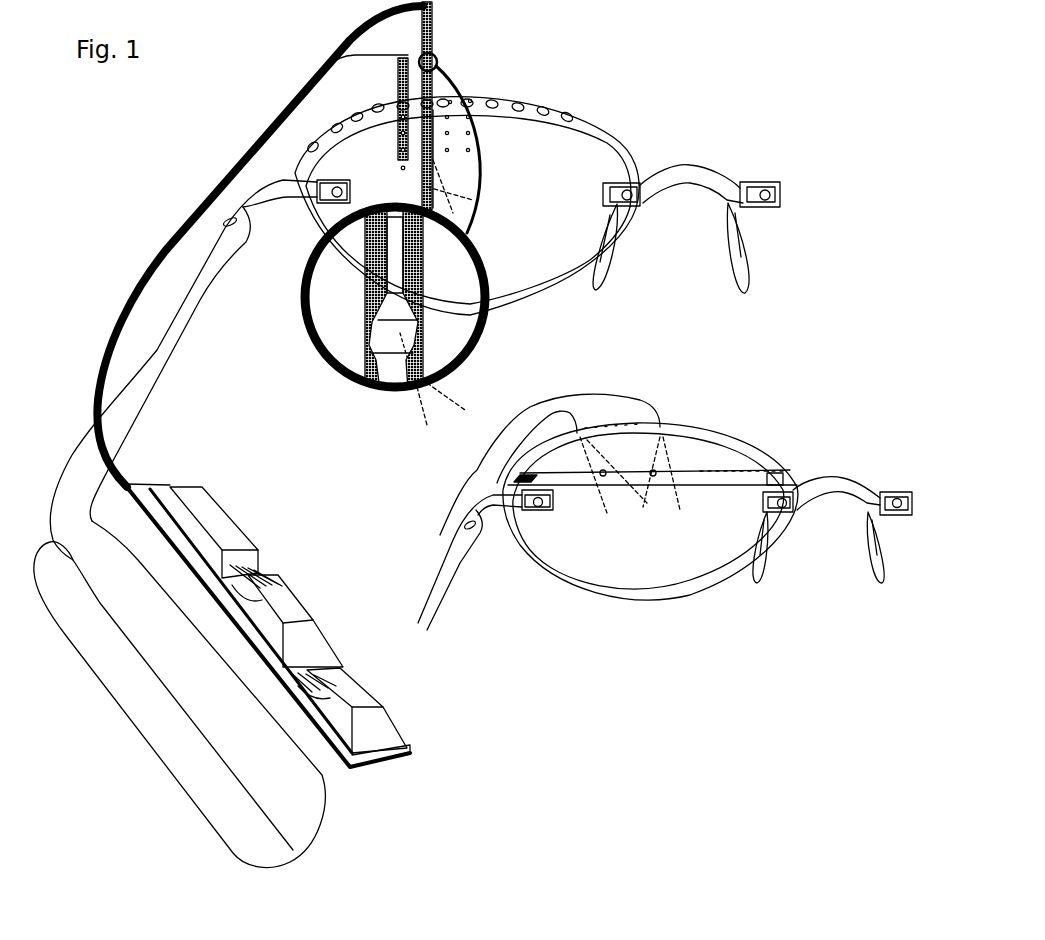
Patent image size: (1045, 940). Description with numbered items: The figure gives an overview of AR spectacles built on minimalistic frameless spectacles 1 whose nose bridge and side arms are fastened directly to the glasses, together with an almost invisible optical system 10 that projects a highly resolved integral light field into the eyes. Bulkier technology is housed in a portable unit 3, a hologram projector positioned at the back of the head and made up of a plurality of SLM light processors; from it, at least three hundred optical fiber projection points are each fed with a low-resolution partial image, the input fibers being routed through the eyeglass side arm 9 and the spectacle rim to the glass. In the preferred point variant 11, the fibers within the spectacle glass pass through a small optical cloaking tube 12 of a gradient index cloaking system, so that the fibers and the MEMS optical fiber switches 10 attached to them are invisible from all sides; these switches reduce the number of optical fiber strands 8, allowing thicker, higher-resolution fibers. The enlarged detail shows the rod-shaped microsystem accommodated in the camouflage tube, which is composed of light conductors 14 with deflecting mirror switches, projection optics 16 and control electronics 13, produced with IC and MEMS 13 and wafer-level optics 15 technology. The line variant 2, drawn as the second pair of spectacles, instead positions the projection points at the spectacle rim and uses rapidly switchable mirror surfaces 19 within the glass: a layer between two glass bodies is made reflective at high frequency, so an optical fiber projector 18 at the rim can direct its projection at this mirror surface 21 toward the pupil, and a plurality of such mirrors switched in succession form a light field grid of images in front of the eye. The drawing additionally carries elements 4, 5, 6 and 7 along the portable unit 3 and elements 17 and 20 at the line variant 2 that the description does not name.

The frameless spectacles 1 is at (597, 143).
The line variant 2 is at (610, 550).
The portable unit 3 is at (323, 827).
The mounting strip 4 is at (413, 755).
The battery module 5 is at (375, 717).
The connecting wires 6 is at (250, 568).
The control module 7 is at (220, 522).
The optical fiber strands 8 is at (105, 440).
The eyeglass side arm 9 is at (157, 352).
The optical system 10 is at (432, 33).
The point variant 11 is at (453, 137).
The optical cloaking tube 12 is at (423, 192).
The control electronics 13 is at (423, 247).
The light conductors 14 is at (417, 290).
The wafer-level optics 15 is at (400, 310).
The projection optics 16 is at (390, 333).
The band 17 is at (570, 397).
The optical fiber projector 18 is at (663, 418).
The switchable mirror surfaces 19 is at (723, 480).
The bar end 20 is at (782, 477).
The mirror surface 21 is at (670, 483).